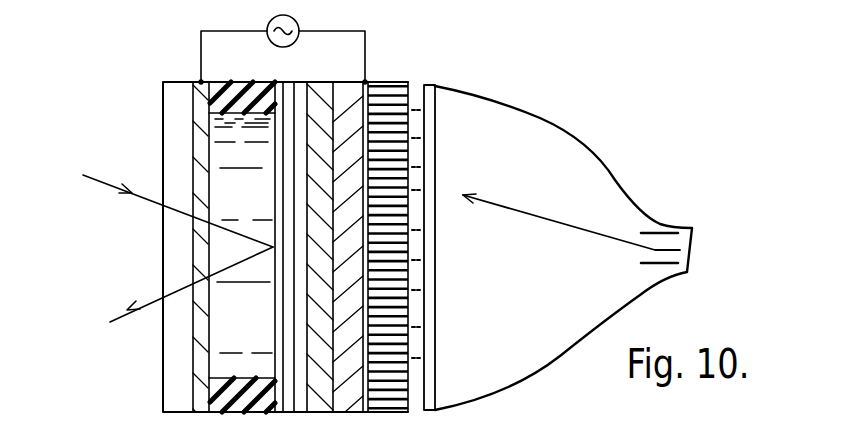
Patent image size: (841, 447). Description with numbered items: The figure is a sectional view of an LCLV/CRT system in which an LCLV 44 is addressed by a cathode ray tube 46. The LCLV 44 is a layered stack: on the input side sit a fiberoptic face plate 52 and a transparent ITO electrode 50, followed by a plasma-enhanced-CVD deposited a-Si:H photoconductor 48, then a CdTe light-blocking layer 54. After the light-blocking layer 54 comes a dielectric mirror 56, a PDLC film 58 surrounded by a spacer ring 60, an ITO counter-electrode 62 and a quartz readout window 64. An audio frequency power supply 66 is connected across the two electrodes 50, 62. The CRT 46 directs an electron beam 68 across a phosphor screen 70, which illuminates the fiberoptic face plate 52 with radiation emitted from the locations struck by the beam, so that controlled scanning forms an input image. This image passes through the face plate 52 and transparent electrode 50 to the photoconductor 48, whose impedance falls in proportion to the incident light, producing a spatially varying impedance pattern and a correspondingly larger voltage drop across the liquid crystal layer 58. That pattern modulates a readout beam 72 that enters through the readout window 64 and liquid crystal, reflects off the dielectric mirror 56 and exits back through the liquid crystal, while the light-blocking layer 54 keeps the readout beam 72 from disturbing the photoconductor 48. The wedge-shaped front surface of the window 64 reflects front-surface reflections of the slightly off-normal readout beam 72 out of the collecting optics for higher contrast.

The LCLV 44 is at (86, 96).
The cathode ray tube 46 is at (657, 135).
The photoconductor 48 is at (367, 86).
The transparent ITO electrode 50 is at (367, 115).
The fiberoptic face plate 52 is at (393, 110).
The light-blocking layer 54 is at (324, 85).
The dielectric mirror 56 is at (280, 83).
The PDLC film 58 is at (233, 162).
The spacer ring 60 is at (233, 82).
The ITO counter-electrode 62 is at (200, 118).
The quartz readout window 64 is at (173, 125).
The audio frequency power supply 66 is at (272, 19).
The electron beam 68 is at (520, 212).
The phosphor screen 70 is at (437, 128).
The readout beam 72 is at (147, 302).